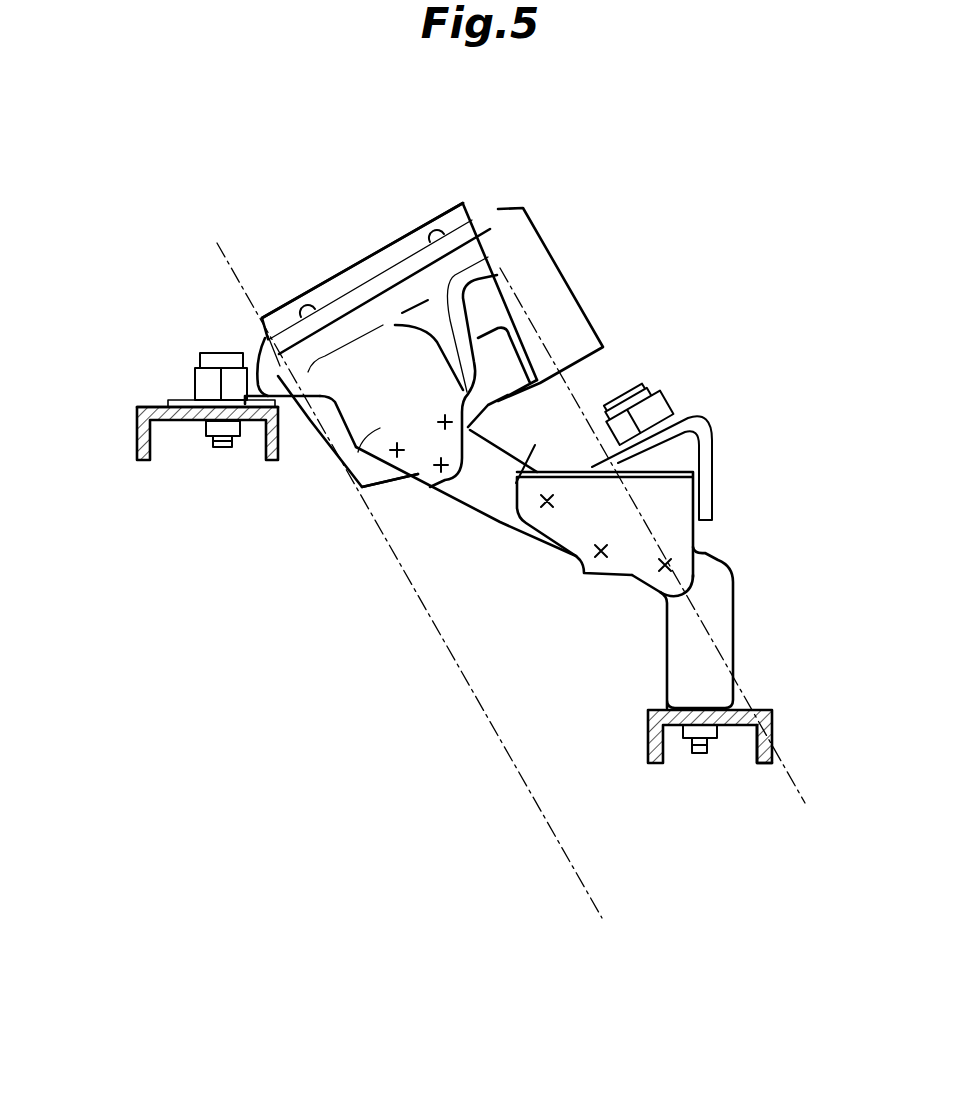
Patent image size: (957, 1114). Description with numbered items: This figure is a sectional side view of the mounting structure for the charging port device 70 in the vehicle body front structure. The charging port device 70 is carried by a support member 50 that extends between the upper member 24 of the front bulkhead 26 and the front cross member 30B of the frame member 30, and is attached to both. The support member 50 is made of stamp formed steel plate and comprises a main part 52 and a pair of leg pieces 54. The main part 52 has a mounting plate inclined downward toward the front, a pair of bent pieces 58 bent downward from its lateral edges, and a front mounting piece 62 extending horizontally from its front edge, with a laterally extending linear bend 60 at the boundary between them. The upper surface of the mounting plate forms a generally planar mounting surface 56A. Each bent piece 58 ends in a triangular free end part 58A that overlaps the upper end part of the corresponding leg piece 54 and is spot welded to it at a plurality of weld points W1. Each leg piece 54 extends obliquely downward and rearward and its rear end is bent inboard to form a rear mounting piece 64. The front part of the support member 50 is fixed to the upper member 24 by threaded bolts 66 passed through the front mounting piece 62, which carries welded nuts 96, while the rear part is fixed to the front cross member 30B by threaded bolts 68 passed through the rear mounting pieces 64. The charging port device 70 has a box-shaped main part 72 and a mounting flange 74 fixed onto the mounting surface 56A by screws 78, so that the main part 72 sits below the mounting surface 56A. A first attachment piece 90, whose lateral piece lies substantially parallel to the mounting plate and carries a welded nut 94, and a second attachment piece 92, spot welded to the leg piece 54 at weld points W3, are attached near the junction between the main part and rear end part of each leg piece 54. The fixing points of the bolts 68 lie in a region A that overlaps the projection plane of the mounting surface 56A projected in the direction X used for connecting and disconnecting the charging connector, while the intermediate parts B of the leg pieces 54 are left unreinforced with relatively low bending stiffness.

The upper member 24 is at (136, 450).
The front bulkhead 26 is at (136, 404).
The frame member 30 is at (778, 712).
The front cross member 30B is at (765, 738).
The support member 50 is at (462, 506).
The main part 52 is at (409, 298).
The leg piece 54 is at (494, 500).
The mounting surface 56A is at (459, 236).
The bent piece 58 is at (278, 395).
The free end part 58A is at (357, 480).
The linear bend 60 is at (262, 375).
The front mounting piece 62 is at (185, 404).
The rear mounting piece 64 is at (705, 690).
The threaded bolt 66 is at (221, 446).
The threaded bolt 68 is at (703, 754).
The charging port device 70 is at (372, 250).
The main part 72 is at (522, 333).
The mounting flange 74 is at (498, 212).
The screw 78 is at (306, 313).
The first attachment piece 90 is at (697, 453).
The second attachment piece 92 is at (632, 568).
The welded nut 94 is at (666, 403).
The welded nut 96 is at (195, 374).
The weld points W1 is at (398, 456).
The weld points W3 is at (596, 551).
The region A is at (801, 790).
The intermediate parts of the main parts of the leg pieces B is at (523, 441).
The direction X is at (303, 186).